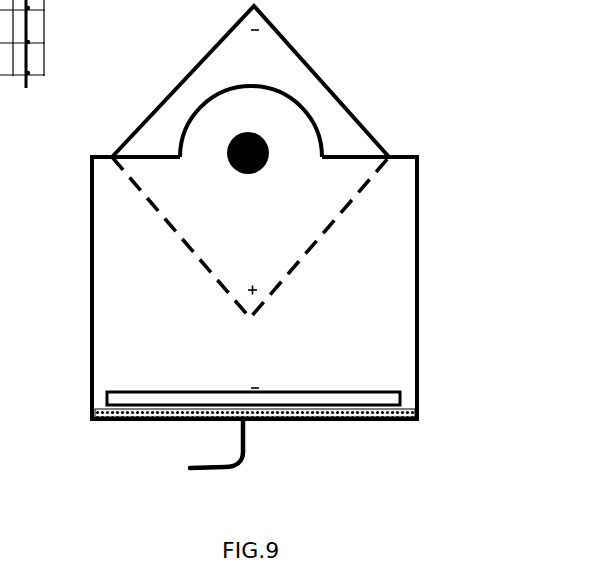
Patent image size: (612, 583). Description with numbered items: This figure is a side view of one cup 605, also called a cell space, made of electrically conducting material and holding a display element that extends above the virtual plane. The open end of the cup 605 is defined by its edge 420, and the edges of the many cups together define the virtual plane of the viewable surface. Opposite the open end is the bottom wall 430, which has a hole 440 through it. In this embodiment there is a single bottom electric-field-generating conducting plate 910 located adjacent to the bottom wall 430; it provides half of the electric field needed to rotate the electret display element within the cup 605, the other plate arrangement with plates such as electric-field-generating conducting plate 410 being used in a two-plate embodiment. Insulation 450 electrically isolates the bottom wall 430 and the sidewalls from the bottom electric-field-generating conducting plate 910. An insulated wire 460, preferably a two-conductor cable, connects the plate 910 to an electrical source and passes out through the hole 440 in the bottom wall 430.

The electric-field-generating conducting plate 410 is at (292, 44).
The edge 420 is at (410, 157).
The bottom wall 430 is at (410, 413).
The hole 440 is at (262, 420).
The insulation 450 is at (92, 413).
The insulated wire 460 is at (232, 456).
The cup 605 is at (90, 313).
The bottom electric-field-generating conducting plate 910 is at (107, 393).